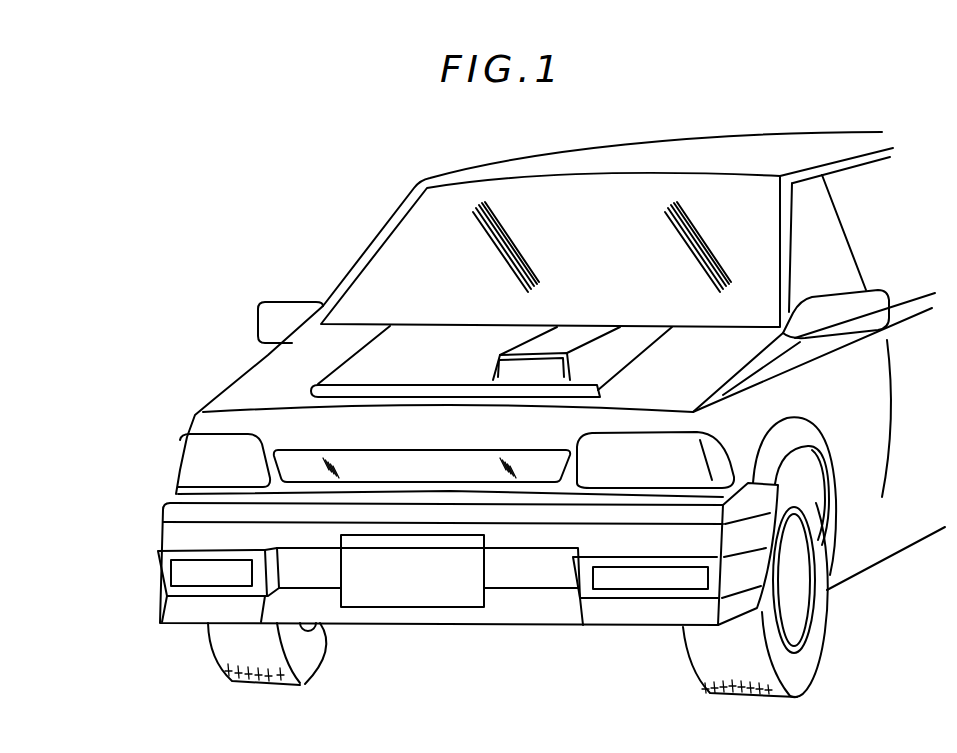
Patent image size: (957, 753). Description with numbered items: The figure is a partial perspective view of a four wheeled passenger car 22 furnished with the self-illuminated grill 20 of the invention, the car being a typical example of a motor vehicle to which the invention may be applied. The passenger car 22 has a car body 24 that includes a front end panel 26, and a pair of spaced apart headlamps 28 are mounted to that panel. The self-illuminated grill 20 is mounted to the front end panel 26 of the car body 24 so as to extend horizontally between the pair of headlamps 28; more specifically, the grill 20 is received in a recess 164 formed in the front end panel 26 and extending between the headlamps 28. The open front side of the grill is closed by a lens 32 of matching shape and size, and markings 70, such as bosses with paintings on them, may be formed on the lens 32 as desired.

The self-illuminated grill 20 is at (363, 446).
The passenger car 22 is at (380, 210).
The car body 24 is at (280, 372).
The front end panel 26 is at (598, 410).
The headlamps 28 is at (193, 459).
The lens 32 is at (478, 466).
The markings 70 is at (430, 462).
The recess 164 is at (384, 458).